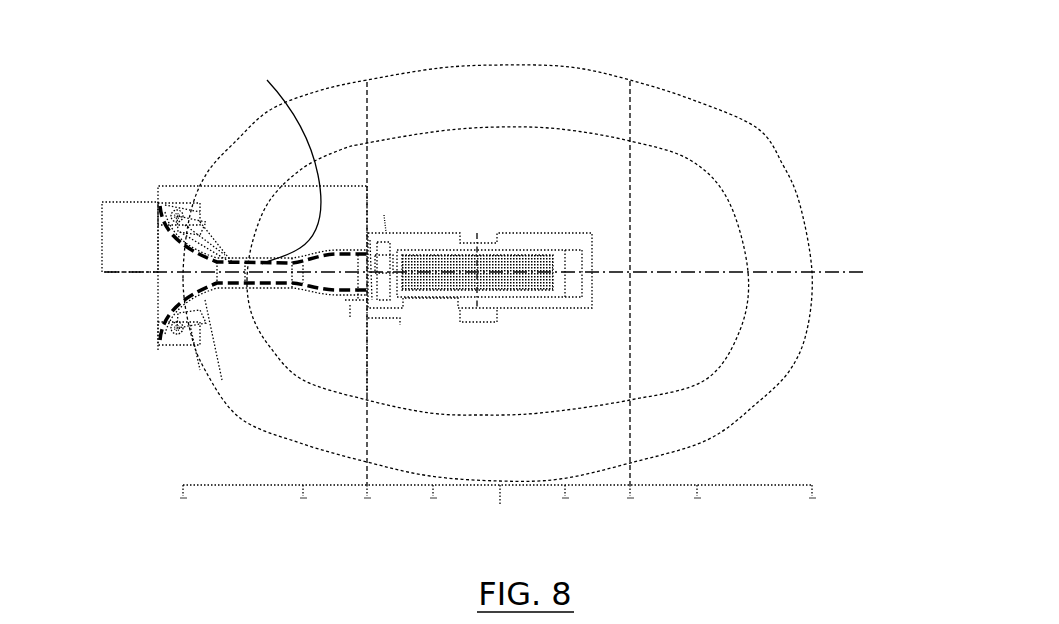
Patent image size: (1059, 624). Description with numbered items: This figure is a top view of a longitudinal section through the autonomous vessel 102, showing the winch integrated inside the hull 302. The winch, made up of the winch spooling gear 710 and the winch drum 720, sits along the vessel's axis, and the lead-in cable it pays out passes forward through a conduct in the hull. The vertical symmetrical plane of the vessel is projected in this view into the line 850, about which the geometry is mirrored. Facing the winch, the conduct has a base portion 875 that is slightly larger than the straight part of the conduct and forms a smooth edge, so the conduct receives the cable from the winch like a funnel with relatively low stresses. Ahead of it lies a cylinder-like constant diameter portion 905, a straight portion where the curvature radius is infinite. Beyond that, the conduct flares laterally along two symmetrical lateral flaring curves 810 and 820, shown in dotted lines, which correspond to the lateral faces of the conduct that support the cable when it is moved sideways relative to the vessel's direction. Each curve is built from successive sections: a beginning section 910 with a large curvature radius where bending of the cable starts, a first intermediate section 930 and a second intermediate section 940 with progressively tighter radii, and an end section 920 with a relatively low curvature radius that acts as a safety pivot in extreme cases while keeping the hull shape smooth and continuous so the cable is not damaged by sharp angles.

The autonomous vessel 102 is at (178, 66).
The hull 302 is at (777, 164).
The winch spooling gear 710 is at (388, 262).
The winch drum 720 is at (477, 257).
The lateral flaring curve 810 is at (282, 161).
The lateral flaring curve 820 is at (165, 318).
The line 850 is at (842, 272).
The base portion 875 is at (348, 269).
The constant diameter portion 905 is at (266, 308).
The beginning section 910 is at (206, 218).
The end section 920 is at (156, 193).
The first intermediate section 930 is at (162, 256).
The second intermediate section 940 is at (147, 233).